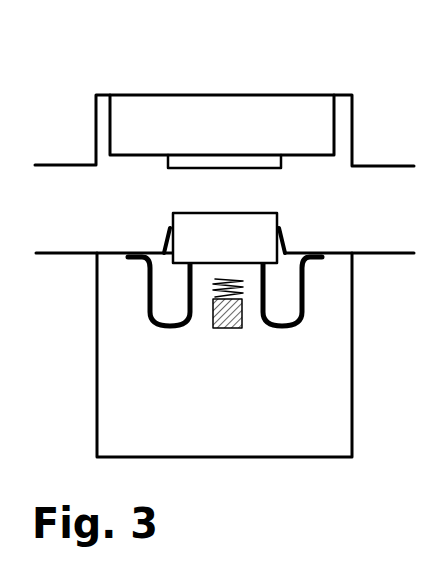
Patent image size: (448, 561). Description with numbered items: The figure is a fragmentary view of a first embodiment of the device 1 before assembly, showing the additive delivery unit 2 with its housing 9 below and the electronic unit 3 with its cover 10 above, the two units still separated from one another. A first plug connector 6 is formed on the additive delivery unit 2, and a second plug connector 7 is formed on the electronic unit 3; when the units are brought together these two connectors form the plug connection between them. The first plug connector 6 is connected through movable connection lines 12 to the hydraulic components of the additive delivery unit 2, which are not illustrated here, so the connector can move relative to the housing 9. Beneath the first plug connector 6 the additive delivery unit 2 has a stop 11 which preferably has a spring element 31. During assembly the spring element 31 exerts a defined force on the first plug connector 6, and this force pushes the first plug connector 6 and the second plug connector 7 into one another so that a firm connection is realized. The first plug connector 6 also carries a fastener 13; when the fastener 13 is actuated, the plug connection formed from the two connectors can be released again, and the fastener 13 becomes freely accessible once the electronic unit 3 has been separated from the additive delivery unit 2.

The device 1 is at (425, 119).
The additive delivery unit 2 is at (225, 391).
The electronic unit 3 is at (237, 91).
The first plug connector 6 is at (172, 213).
The second plug connector 7 is at (281, 161).
The housing 9 is at (353, 315).
The cover 10 is at (352, 127).
The stop 11 is at (213, 330).
The movable connection lines 12 is at (147, 300).
The fastener 13 is at (285, 245).
The spring element 31 is at (240, 287).